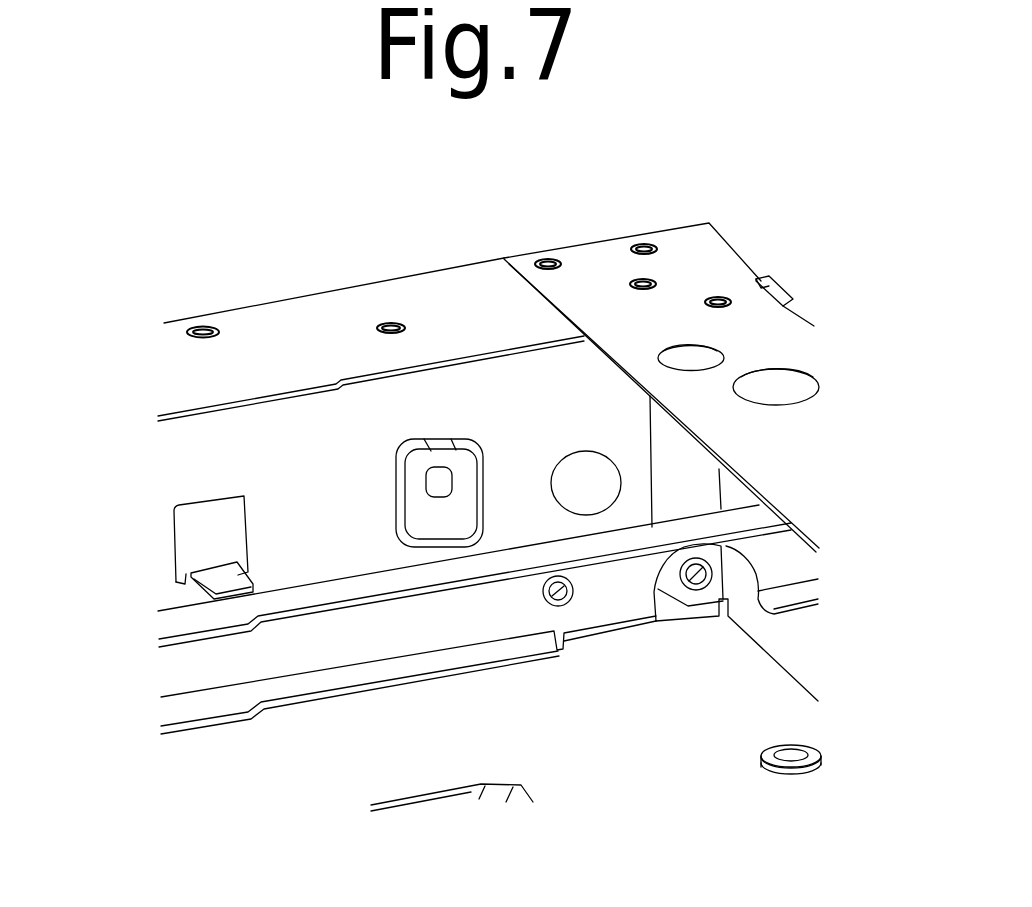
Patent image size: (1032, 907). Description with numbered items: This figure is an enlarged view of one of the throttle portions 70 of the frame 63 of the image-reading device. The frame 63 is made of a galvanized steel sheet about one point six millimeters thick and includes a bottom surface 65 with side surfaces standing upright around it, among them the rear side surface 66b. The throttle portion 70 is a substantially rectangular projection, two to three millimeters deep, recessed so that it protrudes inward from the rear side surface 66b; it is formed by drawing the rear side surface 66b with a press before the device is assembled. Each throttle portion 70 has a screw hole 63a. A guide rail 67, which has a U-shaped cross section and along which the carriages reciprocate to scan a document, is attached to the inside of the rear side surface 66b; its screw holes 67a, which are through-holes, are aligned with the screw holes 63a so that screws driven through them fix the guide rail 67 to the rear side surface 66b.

The frame 63 is at (440, 250).
The screw hole 63a is at (452, 470).
The bottom surface 65 is at (783, 713).
The rear side surface 66b is at (192, 459).
The guide rail 67 is at (369, 636).
The screw hole 67a is at (570, 603).
The throttle portion 70 is at (393, 450).